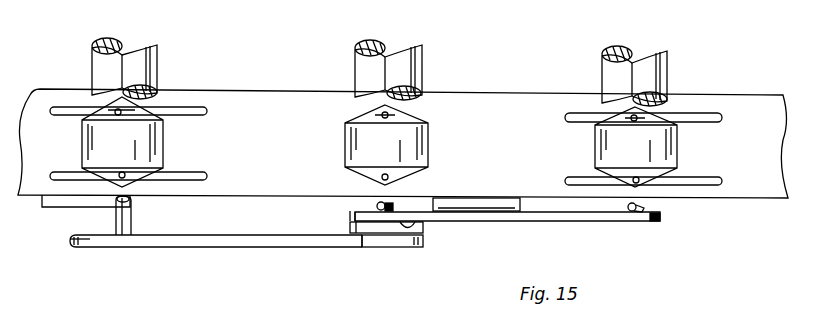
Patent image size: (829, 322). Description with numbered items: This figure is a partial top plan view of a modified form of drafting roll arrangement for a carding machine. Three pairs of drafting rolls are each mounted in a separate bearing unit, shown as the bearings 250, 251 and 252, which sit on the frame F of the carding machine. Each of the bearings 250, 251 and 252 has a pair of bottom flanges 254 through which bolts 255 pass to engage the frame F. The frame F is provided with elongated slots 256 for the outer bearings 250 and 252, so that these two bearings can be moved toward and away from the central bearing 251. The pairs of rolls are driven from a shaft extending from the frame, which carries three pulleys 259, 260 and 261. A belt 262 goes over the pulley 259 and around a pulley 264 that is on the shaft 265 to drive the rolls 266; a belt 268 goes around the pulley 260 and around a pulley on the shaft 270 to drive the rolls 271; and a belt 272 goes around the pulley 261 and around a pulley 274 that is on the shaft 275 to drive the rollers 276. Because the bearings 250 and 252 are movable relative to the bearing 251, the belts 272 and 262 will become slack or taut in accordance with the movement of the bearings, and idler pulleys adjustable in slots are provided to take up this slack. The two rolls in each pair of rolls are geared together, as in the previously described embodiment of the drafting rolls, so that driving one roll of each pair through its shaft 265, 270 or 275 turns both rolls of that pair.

The frame F is at (734, 196).
The bearing 250 is at (160, 133).
The bearing 251 is at (427, 154).
The bearing 252 is at (679, 154).
The bottom flanges 254 is at (140, 114).
The bolts 255 is at (131, 94).
The elongated slots 256 is at (205, 113).
The pulley 259 is at (424, 229).
The pulley 260 is at (365, 247).
The pulley 261 is at (405, 250).
The belt 262 is at (545, 222).
The pulley 264 is at (636, 212).
The shaft 265 is at (646, 222).
The rolls 266 is at (607, 70).
The belt 268 is at (348, 226).
The shaft 270 is at (377, 206).
The rolls 271 is at (362, 70).
The belt 272 is at (250, 248).
The pulley 274 is at (115, 248).
The shaft 275 is at (134, 222).
The rollers 276 is at (100, 70).